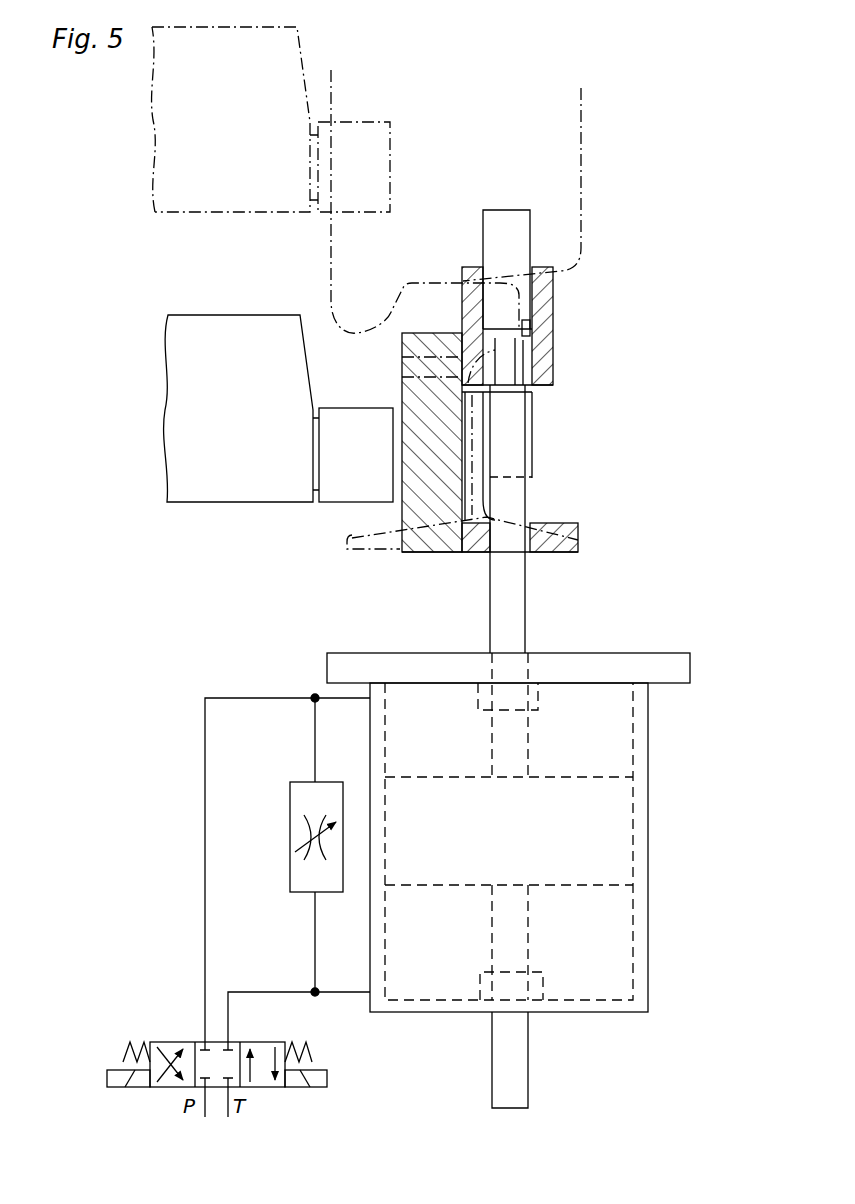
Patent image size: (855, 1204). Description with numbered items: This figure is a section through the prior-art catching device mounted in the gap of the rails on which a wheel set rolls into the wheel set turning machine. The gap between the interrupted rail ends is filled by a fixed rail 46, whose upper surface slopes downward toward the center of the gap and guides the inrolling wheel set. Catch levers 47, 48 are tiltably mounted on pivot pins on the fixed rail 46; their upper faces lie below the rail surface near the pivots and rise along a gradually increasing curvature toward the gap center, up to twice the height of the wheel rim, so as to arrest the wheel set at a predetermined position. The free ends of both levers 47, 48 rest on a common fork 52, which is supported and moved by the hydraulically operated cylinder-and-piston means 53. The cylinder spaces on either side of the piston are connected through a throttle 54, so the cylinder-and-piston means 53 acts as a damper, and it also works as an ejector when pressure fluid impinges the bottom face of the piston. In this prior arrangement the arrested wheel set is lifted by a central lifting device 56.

The fixed rail 46 is at (440, 495).
The catch lever 47 is at (609, 648).
The catch lever 48 is at (503, 235).
The common fork 52 is at (540, 350).
The hydraulically operated cylinder-and-piston means 53 is at (600, 845).
The throttle 54 is at (303, 855).
The central lifting device 56 is at (247, 470).